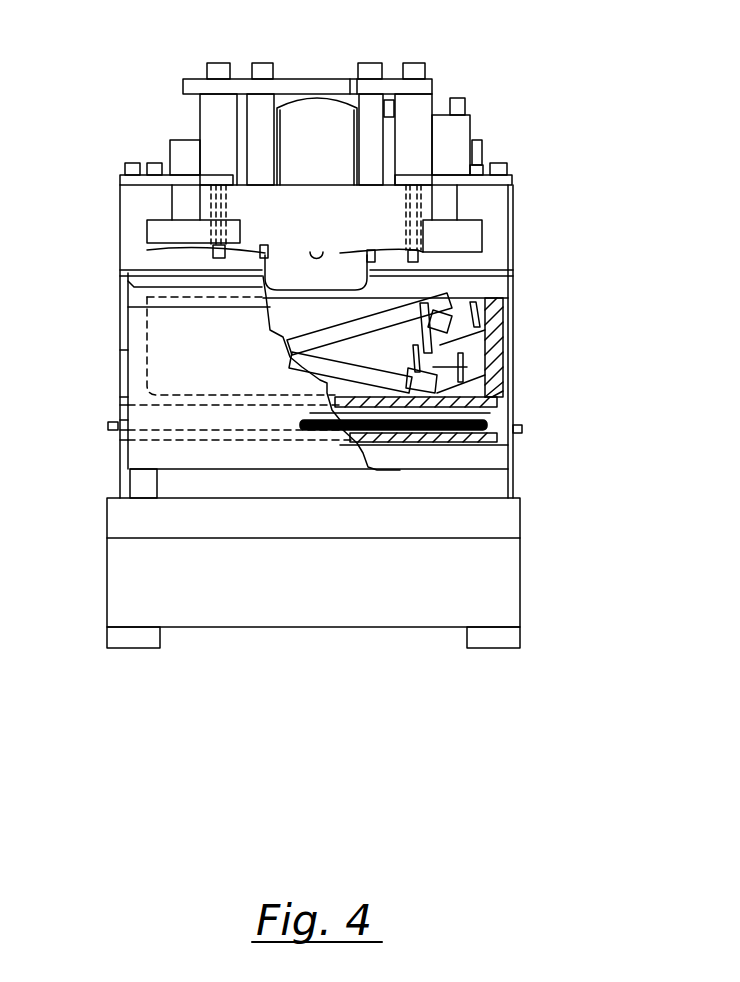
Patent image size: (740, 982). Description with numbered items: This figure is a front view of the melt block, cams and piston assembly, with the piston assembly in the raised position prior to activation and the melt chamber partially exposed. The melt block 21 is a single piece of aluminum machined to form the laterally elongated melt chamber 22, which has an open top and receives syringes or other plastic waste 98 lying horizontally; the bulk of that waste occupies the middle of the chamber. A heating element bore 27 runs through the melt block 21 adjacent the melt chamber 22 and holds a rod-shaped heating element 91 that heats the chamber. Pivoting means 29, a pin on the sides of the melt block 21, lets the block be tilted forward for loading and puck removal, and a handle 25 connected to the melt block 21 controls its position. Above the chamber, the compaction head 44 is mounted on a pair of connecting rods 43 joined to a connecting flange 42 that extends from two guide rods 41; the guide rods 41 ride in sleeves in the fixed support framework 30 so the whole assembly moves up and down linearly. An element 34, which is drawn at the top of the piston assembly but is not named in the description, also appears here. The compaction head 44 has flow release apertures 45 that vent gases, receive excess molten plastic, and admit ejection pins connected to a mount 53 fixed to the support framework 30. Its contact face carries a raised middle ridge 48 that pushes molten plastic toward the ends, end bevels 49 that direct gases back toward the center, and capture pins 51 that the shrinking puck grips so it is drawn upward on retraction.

The melt block 21 is at (510, 305).
The melt chamber 22 is at (372, 318).
The handle 25 is at (124, 275).
The heating element bore 27 is at (143, 402).
The pivoting means 29 is at (113, 428).
The support framework 30 is at (503, 517).
The press arch 34 is at (316, 118).
The guide rods 41 is at (218, 112).
The connecting flange 42 is at (297, 77).
The connecting rods 43 is at (268, 117).
The compaction head 44 is at (278, 196).
The flow release apertures 45 is at (213, 223).
The middle ridge 48 is at (316, 257).
The end bevels 49 is at (148, 251).
The capture pins 51 is at (263, 257).
The mount 53 is at (172, 140).
The heating element 91 is at (510, 446).
The plastic waste 98 is at (465, 330).